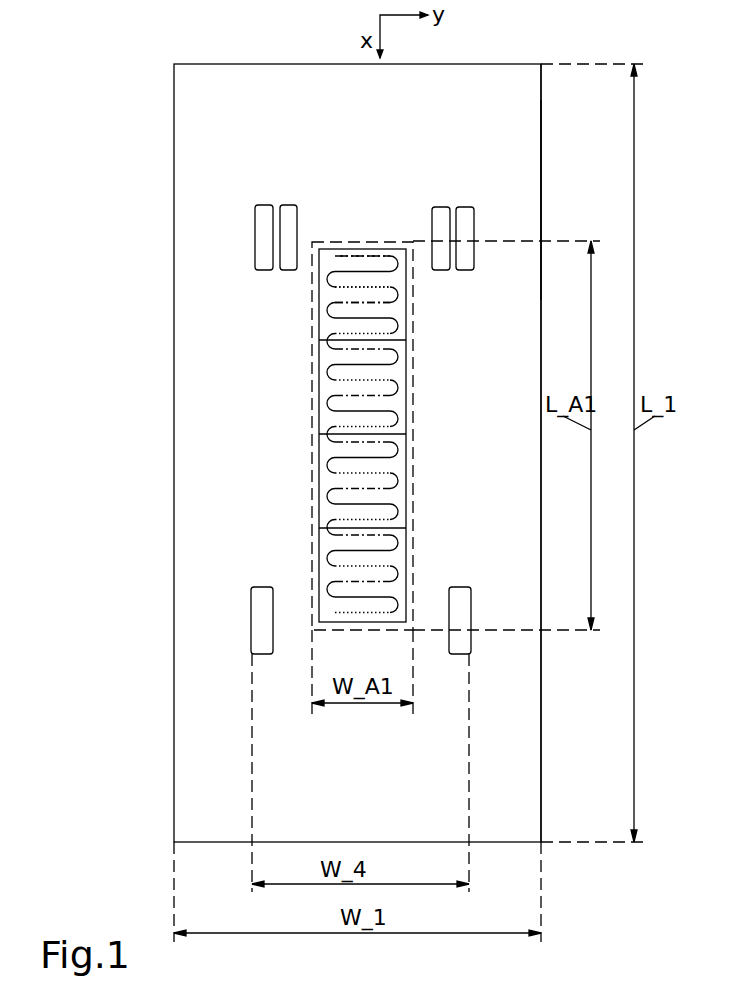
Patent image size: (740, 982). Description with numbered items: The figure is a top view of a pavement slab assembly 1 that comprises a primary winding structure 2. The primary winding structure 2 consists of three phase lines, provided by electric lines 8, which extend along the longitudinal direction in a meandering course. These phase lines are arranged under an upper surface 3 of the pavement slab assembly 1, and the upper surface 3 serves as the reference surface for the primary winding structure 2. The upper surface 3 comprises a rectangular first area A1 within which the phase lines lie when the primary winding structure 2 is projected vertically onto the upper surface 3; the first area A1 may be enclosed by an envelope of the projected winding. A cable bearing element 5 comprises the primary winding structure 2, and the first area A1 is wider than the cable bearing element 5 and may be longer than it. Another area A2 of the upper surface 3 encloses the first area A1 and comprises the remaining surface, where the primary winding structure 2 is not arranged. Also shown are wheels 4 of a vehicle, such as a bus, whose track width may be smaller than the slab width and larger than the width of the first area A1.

The pavement slab assembly 1 is at (470, 78).
The primary winding structure 2 is at (335, 489).
The upper surface 3 is at (520, 332).
The wheels 4 is at (253, 220).
The cable bearing element 5 is at (318, 330).
The electric lines 8 is at (343, 285).
The first area A1 is at (311, 362).
The other area A2 is at (521, 170).